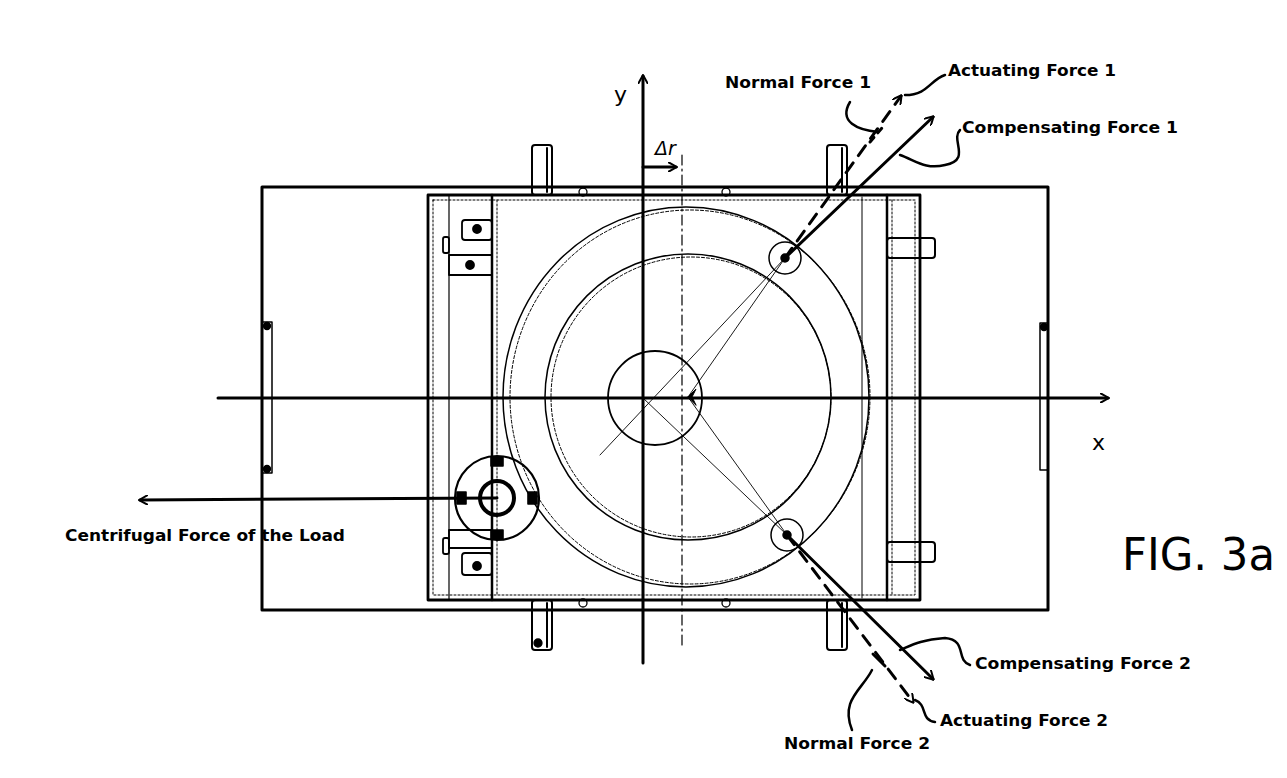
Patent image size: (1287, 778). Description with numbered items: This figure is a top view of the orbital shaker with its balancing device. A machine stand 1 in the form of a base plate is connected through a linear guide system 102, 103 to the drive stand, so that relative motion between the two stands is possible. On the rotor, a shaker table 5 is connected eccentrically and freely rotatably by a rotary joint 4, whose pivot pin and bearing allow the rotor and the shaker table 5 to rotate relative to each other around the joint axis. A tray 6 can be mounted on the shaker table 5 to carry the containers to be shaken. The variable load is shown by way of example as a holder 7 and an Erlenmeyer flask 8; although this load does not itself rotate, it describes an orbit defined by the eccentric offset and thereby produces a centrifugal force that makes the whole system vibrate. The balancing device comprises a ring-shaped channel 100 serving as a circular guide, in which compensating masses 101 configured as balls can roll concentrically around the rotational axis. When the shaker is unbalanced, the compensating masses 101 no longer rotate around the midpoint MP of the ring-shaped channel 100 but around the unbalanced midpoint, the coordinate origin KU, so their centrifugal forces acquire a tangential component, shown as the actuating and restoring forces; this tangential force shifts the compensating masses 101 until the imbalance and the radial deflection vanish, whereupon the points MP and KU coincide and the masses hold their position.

The machine stand 1 is at (440, 590).
The rotary joint 4 is at (660, 366).
The shaker table 5 is at (505, 207).
The tray 6 is at (280, 208).
The holder 7 is at (497, 462).
The Erlenmeyer flask 8 is at (483, 513).
The ring-shaped channel 100 is at (670, 563).
The compensating masses 101 is at (688, 396).
The linear guide system 102 is at (478, 272).
The linear guide system 103 is at (538, 645).
The midpoint MP is at (690, 396).
The coordinate origin KU is at (637, 405).